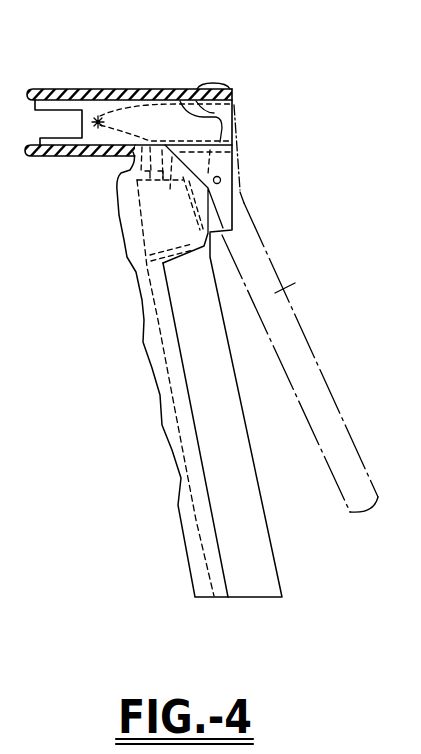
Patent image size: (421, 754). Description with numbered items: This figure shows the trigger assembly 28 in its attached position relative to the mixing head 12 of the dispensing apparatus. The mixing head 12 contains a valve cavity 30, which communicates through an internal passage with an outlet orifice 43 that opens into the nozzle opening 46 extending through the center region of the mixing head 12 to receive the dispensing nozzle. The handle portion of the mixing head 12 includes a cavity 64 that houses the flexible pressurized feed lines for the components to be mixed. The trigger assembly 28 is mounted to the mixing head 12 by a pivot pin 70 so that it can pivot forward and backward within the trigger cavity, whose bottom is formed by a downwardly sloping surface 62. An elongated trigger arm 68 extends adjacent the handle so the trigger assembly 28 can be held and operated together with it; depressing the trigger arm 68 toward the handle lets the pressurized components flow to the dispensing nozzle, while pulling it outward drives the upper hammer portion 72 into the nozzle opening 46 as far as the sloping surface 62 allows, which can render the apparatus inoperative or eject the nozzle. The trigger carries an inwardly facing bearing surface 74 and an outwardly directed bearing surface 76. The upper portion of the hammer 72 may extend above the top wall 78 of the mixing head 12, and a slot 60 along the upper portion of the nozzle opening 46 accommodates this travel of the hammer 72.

The mixing head 12 is at (168, 89).
The trigger assembly 28 is at (312, 343).
The first valve cavity 30 is at (110, 155).
The first outlet orifice 43 is at (98, 114).
The nozzle opening 46 is at (88, 100).
The slot 60 is at (196, 89).
The sloping surface 62 is at (227, 189).
The cavity 64 is at (266, 537).
The trigger arm 68 is at (298, 278).
The pivot pin 70 is at (221, 179).
The hammer portion 72 is at (226, 112).
The bearing surface 74 is at (176, 88).
The bearing surface 76 is at (238, 134).
The top wall 78 is at (233, 88).